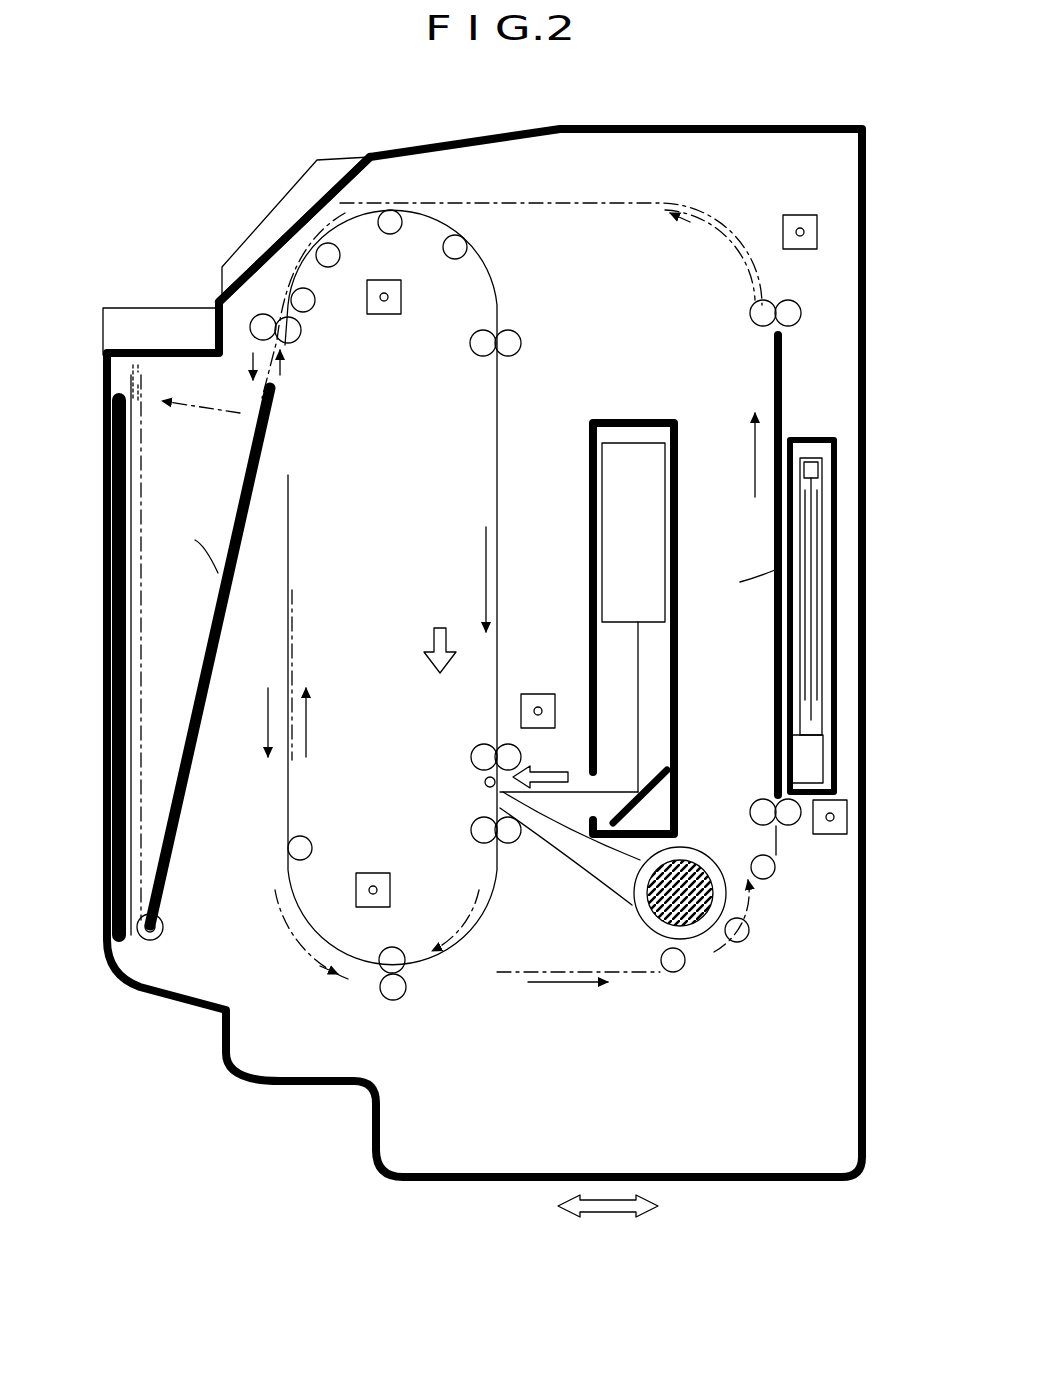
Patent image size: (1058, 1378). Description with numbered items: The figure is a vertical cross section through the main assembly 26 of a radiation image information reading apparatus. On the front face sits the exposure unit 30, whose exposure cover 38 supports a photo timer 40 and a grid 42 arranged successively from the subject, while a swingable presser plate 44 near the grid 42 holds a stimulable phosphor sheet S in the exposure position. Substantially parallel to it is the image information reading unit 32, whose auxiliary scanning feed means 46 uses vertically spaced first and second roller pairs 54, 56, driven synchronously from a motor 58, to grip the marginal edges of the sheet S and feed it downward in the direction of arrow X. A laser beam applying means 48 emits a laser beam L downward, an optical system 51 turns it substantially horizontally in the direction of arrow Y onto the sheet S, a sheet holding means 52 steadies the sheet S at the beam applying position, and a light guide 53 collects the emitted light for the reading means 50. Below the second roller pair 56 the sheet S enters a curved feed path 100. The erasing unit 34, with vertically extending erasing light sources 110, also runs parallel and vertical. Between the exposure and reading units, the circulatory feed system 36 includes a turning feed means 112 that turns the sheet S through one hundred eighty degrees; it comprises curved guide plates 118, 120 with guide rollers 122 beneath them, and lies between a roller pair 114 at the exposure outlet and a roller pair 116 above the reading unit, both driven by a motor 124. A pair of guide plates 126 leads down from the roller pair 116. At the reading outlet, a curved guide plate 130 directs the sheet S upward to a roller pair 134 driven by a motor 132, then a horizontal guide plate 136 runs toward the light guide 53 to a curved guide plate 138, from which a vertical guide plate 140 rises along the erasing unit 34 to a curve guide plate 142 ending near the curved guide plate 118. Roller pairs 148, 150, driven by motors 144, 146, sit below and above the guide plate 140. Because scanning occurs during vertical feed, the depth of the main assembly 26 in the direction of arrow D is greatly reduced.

The main assembly 26 is at (790, 73).
The exposure unit 30 is at (130, 303).
The image information reading unit 32 is at (588, 386).
The erasing unit 34 is at (815, 425).
The circulatory feed system 36 is at (567, 185).
The exposure cover 38 is at (185, 340).
The photo timer 40 is at (106, 500).
The grid 42 is at (118, 558).
The swingable presser plate 44 is at (175, 808).
The auxiliary scanning feed means 46 is at (450, 738).
The laser beam applying means 48 is at (650, 477).
The reading means 50 is at (708, 950).
The optical system 51 is at (655, 798).
The sheet holding means 52 is at (470, 776).
The light guide 53 is at (590, 893).
The first roller pair 54 is at (471, 757).
The second roller pair 56 is at (472, 828).
The motor 58 is at (540, 694).
The curved feed path 100 is at (492, 928).
The erasing light sources 110 is at (810, 580).
The turning feed means 112 is at (402, 192).
The roller pair 114 is at (312, 305).
The roller pair 116 is at (510, 338).
The curved guide plate 118 is at (345, 198).
The curved guide plate 120 is at (497, 300).
The guide rollers 122 is at (340, 255).
The motor 124 is at (388, 315).
The pair of guide plates 126 is at (497, 415).
The curved guide plate 130 is at (358, 968).
The motor 132 is at (372, 873).
The roller pair 134 is at (395, 1000).
The horizontal guide plate 136 is at (645, 973).
The curved guide plate 138 is at (745, 945).
The vertical guide plate 140 is at (775, 340).
The curve guide plate 142 is at (706, 212).
The motor 144 is at (845, 822).
The motor 146 is at (800, 215).
The roller pair 148 is at (755, 810).
The roller pair 150 is at (755, 308).
The stimulable phosphor sheet S is at (453, 655).
The laser beam L is at (640, 678).
The arrow X is at (443, 691).
The arrow Y is at (540, 763).
The arrow D is at (608, 1221).